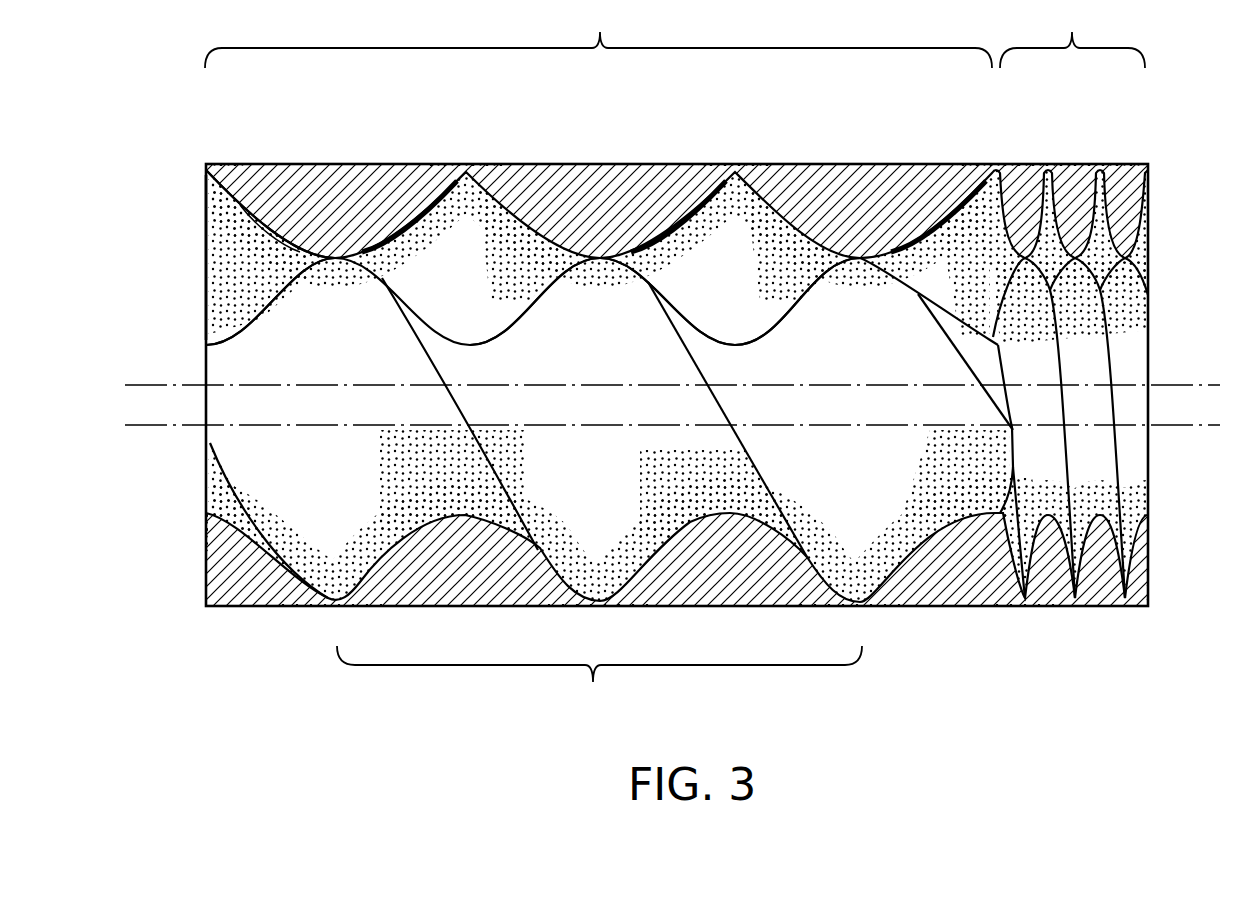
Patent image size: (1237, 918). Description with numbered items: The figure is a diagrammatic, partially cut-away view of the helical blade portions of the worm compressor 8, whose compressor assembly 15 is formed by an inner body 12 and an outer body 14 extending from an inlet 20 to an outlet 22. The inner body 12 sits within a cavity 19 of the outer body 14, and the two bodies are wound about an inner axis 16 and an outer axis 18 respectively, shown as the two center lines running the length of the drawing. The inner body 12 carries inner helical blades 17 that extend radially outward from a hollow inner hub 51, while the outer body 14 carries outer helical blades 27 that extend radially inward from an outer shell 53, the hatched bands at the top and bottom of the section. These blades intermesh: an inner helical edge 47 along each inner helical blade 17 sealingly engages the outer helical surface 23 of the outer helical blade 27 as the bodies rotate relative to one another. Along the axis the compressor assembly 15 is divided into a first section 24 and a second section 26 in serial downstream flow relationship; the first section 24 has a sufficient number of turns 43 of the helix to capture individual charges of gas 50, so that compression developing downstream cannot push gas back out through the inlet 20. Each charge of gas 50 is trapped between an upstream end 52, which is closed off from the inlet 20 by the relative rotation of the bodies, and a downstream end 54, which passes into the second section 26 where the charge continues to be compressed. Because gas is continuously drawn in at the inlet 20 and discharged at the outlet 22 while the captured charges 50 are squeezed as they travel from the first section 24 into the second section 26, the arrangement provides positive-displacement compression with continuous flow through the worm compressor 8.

The worm compressor 8 is at (116, 659).
The inner body 12 is at (210, 437).
The outer body 14 is at (325, 166).
The compressor assembly 15 is at (206, 228).
The inner axis 16 is at (1172, 425).
The inner helical blade 17 is at (616, 270).
The outer axis 18 is at (1205, 385).
The cavity 19 is at (466, 172).
The inlet 20 is at (206, 297).
The outlet 22 is at (1148, 270).
The outer helical surface 23 is at (742, 213).
The first section 24 is at (598, 34).
The second section 26 is at (1072, 34).
The outer helical blade 27 is at (270, 166).
The turn 43 is at (599, 682).
The inner helical edge 47 is at (668, 305).
The charge of gas 50 is at (540, 256).
The hollow inner hub 51 is at (206, 367).
The upstream end 52 is at (338, 603).
The outer shell 53 is at (206, 165).
The downstream end 54 is at (845, 252).